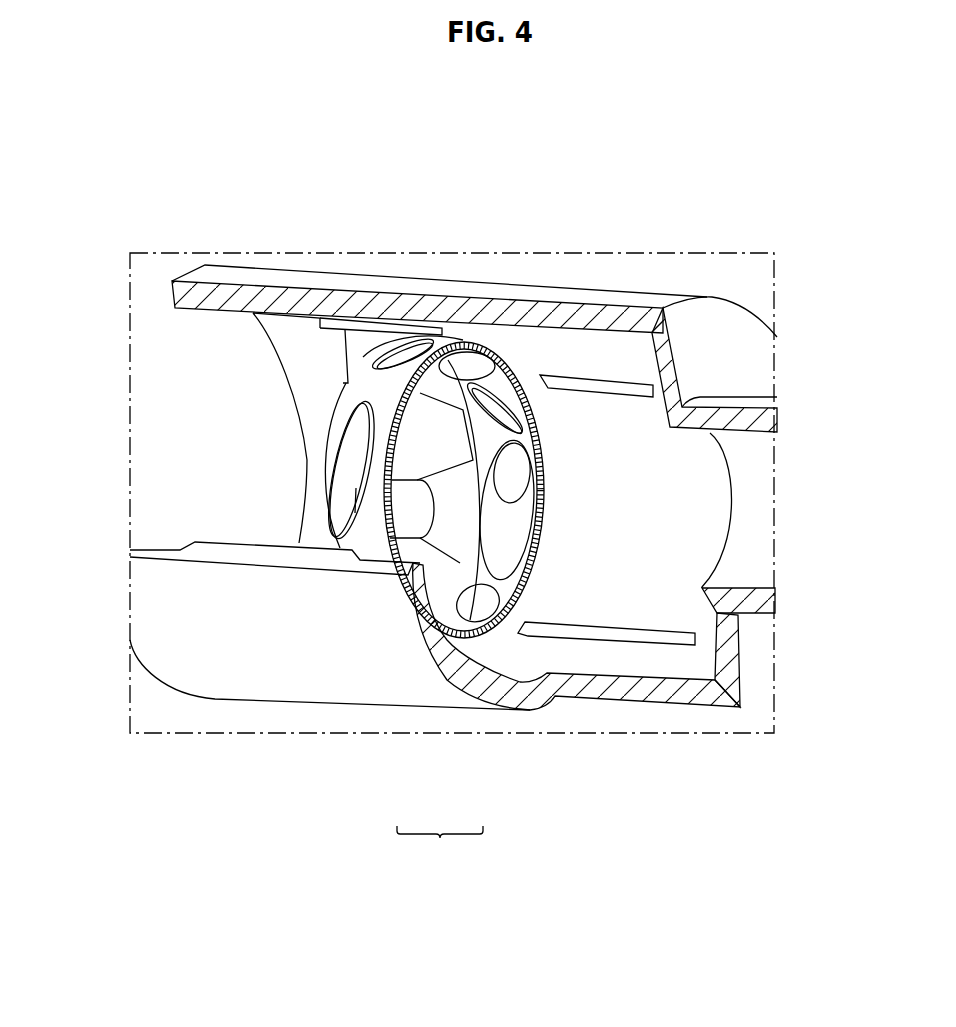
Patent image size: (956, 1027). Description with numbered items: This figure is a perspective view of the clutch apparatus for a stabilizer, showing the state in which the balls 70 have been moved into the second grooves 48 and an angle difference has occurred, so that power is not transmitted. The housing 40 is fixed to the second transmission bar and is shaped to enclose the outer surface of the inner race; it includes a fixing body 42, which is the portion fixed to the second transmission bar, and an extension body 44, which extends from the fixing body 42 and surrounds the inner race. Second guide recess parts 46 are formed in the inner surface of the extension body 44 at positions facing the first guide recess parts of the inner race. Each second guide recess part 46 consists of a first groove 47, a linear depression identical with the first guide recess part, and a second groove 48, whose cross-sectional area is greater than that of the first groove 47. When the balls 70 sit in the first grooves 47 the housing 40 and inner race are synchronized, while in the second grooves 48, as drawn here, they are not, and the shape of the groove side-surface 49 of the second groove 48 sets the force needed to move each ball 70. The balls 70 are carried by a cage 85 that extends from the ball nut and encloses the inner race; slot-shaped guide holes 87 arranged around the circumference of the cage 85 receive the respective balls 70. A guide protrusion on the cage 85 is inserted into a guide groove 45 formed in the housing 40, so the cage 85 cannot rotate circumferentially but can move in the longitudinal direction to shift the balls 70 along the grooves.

The housing 40 is at (329, 268).
The fixing body 42 is at (725, 418).
The extension body 44 is at (241, 278).
The guide groove 45 is at (643, 636).
The second guide recess part 46 is at (440, 846).
The first groove 47 is at (411, 513).
The second groove 48 is at (452, 531).
The groove side-surface 49 is at (458, 505).
The ball 70 is at (426, 358).
The cage 85 is at (333, 437).
The guide hole 87 is at (355, 502).